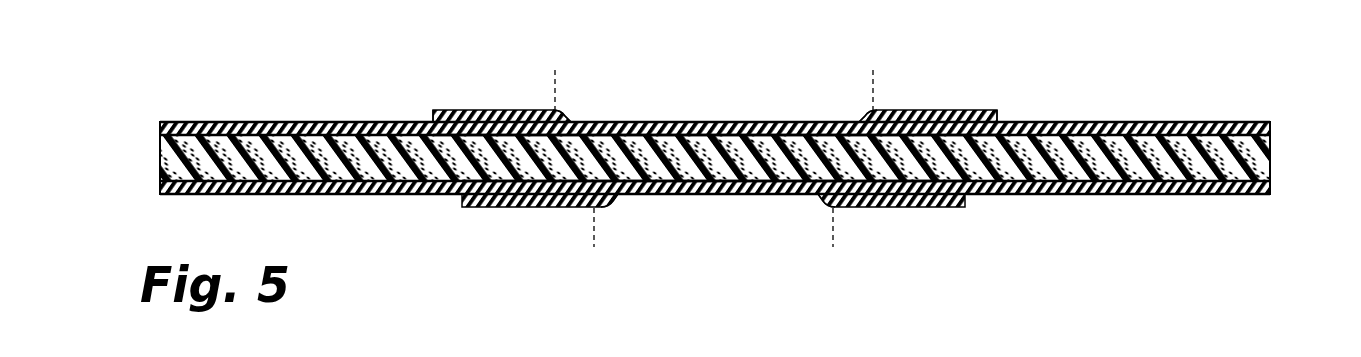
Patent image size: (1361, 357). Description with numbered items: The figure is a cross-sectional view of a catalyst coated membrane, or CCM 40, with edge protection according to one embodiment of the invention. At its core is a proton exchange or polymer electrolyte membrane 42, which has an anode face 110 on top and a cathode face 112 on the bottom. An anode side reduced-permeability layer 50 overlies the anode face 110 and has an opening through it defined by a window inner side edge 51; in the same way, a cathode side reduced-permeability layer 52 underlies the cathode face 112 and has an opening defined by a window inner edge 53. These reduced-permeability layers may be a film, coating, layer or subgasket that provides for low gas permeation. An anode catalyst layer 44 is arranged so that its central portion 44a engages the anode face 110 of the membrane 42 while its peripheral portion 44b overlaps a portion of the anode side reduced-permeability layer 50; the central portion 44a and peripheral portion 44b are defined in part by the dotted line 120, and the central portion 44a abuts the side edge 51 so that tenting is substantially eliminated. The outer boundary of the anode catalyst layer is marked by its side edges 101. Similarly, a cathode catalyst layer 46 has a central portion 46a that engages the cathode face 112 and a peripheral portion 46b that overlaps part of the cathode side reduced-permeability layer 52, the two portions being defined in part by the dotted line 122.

The CCM 40 is at (1017, 41).
The membrane 42 is at (1270, 147).
The anode catalyst layer 44 is at (711, 71).
The central portion 44a is at (687, 134).
The peripheral portion 44b is at (487, 110).
The cathode catalyst layer 46 is at (718, 248).
The central portion 46a is at (718, 194).
The peripheral portion 46b is at (513, 208).
The anode side reduced-permeability layer 50 is at (222, 122).
The window inner side edge 51 is at (570, 122).
The cathode side reduced-permeability layer 52 is at (342, 195).
The window inner edge 53 is at (607, 196).
The side edges 101 is at (432, 118).
The anode face 110 is at (648, 130).
The cathode face 112 is at (688, 182).
The dotted line 120 is at (557, 82).
The dotted line 122 is at (594, 235).